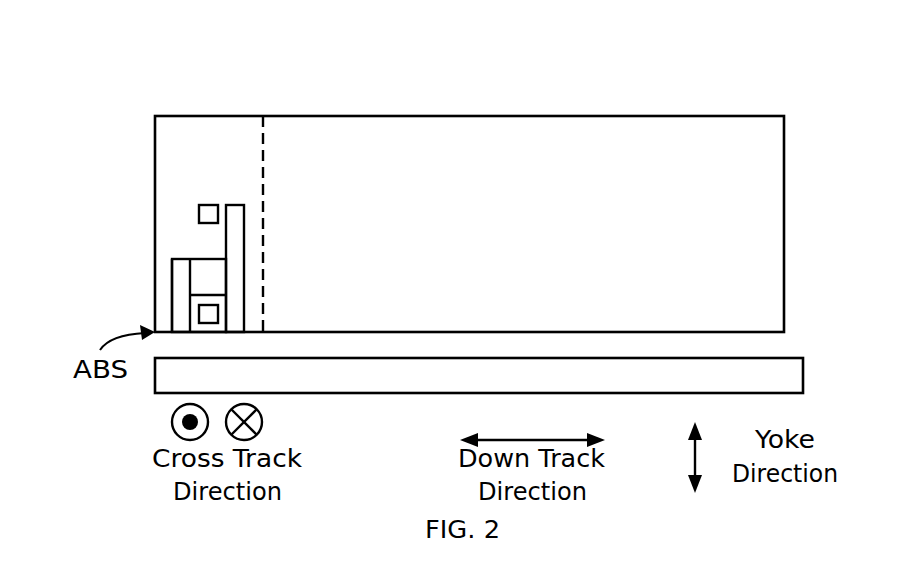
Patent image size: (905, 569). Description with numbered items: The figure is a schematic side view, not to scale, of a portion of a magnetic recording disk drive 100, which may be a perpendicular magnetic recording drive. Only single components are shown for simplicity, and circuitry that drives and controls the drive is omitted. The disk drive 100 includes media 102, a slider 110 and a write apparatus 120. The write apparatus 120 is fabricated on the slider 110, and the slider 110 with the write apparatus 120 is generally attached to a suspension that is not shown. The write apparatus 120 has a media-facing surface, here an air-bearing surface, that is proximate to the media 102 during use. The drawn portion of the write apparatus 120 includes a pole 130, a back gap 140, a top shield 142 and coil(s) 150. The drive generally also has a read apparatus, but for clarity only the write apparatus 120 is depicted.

The disk drive 100 is at (482, 57).
The media 102 is at (155, 385).
The slider 110 is at (784, 187).
The write apparatus 120 is at (263, 170).
The pole 130 is at (228, 205).
The back gap 140 is at (200, 259).
The top shield 142 is at (172, 278).
The coil(s) 150 is at (200, 205).